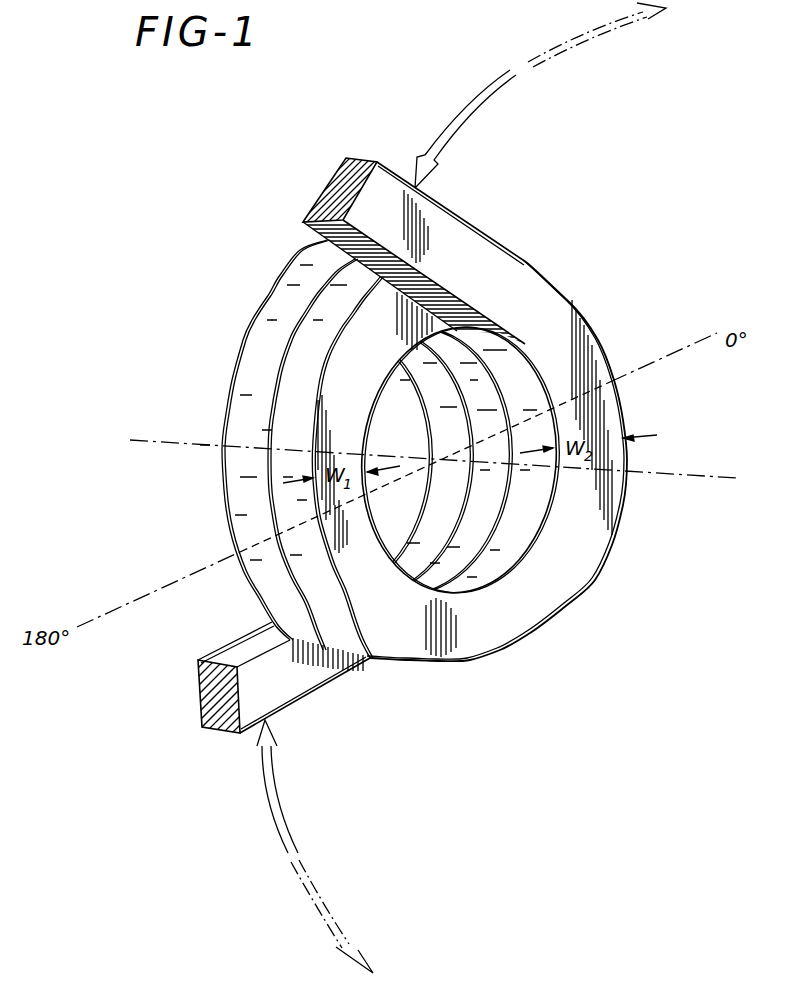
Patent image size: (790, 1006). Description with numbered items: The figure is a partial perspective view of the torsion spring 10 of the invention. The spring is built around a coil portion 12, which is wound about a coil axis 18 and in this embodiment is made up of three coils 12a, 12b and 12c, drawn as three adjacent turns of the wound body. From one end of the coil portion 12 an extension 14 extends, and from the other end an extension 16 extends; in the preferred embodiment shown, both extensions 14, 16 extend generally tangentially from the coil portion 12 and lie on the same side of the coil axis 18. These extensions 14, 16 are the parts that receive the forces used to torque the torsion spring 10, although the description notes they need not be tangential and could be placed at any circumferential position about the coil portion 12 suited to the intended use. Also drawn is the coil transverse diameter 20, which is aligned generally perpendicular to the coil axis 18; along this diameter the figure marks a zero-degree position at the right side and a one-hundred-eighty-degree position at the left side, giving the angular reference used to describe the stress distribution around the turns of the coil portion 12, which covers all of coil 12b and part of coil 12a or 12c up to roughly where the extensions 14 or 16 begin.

The torsion spring 10 is at (566, 630).
The coil portion 12 is at (237, 362).
The coil 12a is at (440, 507).
The coil 12b is at (467, 533).
The coil 12c is at (483, 570).
The extension 14 is at (470, 215).
The extension 16 is at (307, 698).
The coil axis 18 is at (703, 478).
The coil transverse diameter 20 is at (690, 342).